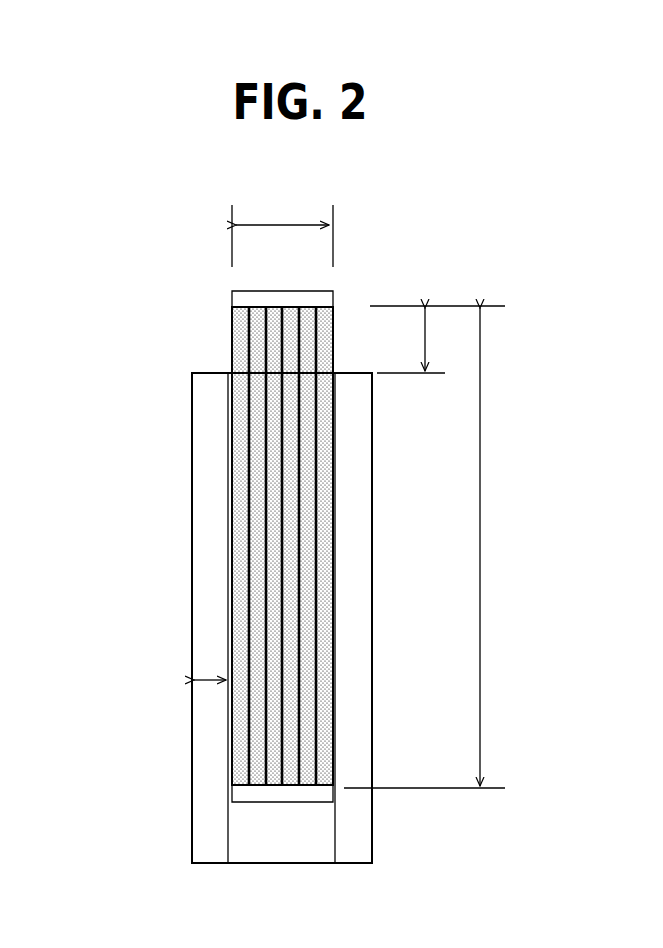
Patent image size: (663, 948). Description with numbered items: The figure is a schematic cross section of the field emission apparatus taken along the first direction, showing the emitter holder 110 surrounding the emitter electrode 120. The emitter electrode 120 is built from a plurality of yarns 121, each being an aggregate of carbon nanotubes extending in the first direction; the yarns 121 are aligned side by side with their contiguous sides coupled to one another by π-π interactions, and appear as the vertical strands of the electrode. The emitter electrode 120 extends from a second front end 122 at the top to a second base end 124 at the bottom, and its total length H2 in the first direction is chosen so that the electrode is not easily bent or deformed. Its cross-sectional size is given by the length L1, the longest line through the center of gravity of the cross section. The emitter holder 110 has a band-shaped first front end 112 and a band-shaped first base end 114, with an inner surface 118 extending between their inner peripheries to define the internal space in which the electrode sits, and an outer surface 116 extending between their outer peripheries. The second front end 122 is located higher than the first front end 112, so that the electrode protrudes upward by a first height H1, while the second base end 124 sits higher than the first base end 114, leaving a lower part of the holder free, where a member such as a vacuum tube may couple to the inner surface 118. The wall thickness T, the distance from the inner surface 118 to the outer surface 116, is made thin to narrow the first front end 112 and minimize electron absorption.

The emitter holder 110 is at (192, 555).
The first front end 112 is at (205, 373).
The first base end 114 is at (213, 863).
The outer surface 116 is at (193, 842).
The inner surface 118 is at (230, 842).
The emitter electrode 120 is at (231, 332).
The yarns 121 is at (323, 327).
The second front end 122 is at (282, 291).
The second base end 124 is at (282, 802).
The cross-sectional length L1 is at (282, 233).
The first height H1 is at (437, 339).
The total length H2 is at (424, 548).
The thickness T is at (212, 680).